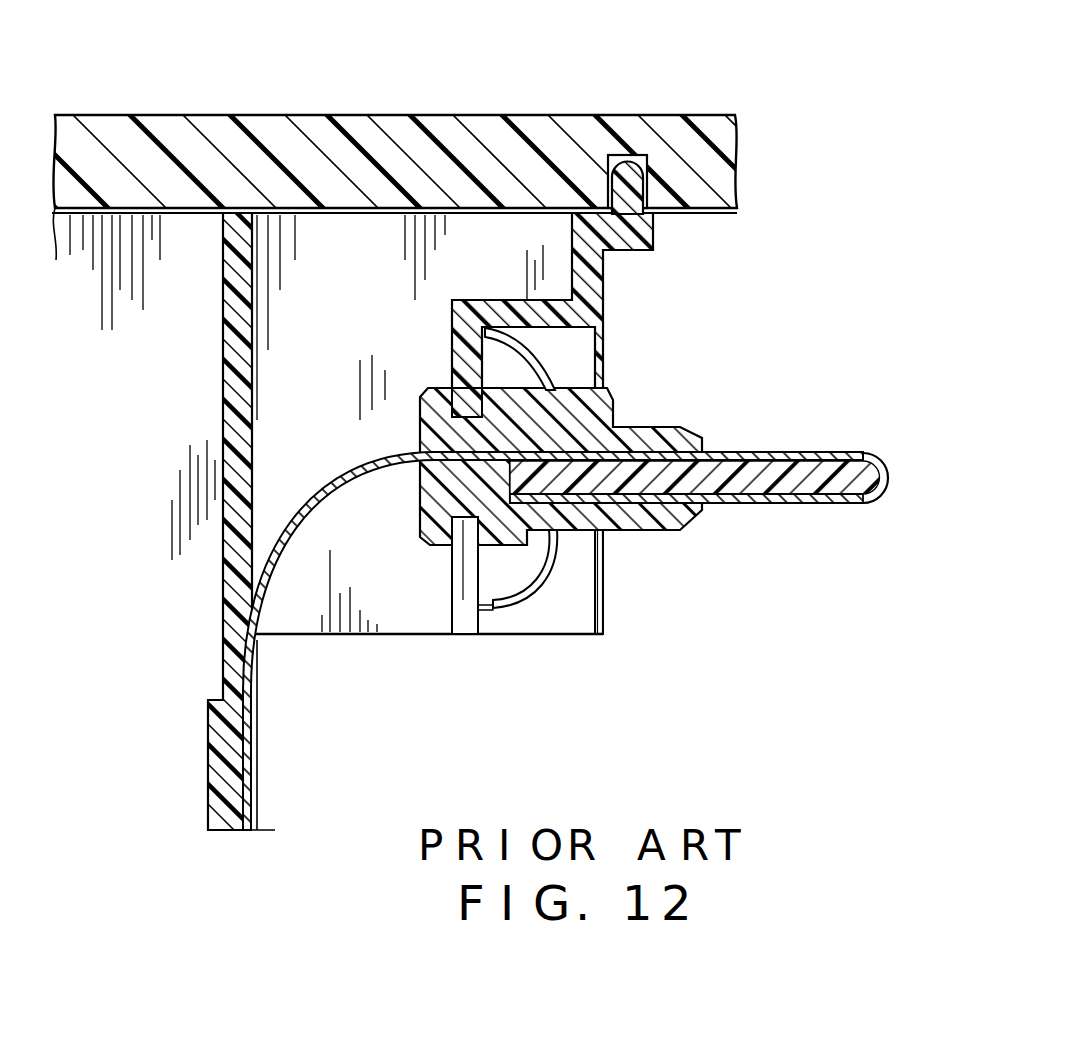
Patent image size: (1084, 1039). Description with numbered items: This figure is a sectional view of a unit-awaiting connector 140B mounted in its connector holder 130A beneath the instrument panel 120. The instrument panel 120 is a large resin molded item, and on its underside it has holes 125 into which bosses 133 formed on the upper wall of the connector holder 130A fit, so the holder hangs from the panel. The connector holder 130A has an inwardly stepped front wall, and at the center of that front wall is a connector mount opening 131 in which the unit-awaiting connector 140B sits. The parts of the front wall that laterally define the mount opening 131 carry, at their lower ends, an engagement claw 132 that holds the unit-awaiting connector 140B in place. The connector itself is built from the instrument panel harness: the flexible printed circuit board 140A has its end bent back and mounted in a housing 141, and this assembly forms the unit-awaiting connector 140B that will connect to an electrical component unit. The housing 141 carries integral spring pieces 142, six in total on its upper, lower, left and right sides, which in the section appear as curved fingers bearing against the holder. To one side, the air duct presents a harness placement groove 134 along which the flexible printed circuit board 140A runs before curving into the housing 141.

The instrument panel 120 is at (406, 116).
The hole 125 is at (628, 165).
The boss 133 is at (632, 183).
The connector holder 130A is at (603, 303).
The spring piece 142 is at (548, 356).
The unit-awaiting connector 140B is at (713, 428).
The housing 141 is at (665, 532).
The connector mount opening 131 is at (572, 588).
The engagement claw 132 is at (478, 607).
The harness placement groove 134 is at (222, 633).
The flexible printed circuit board 140A is at (255, 722).